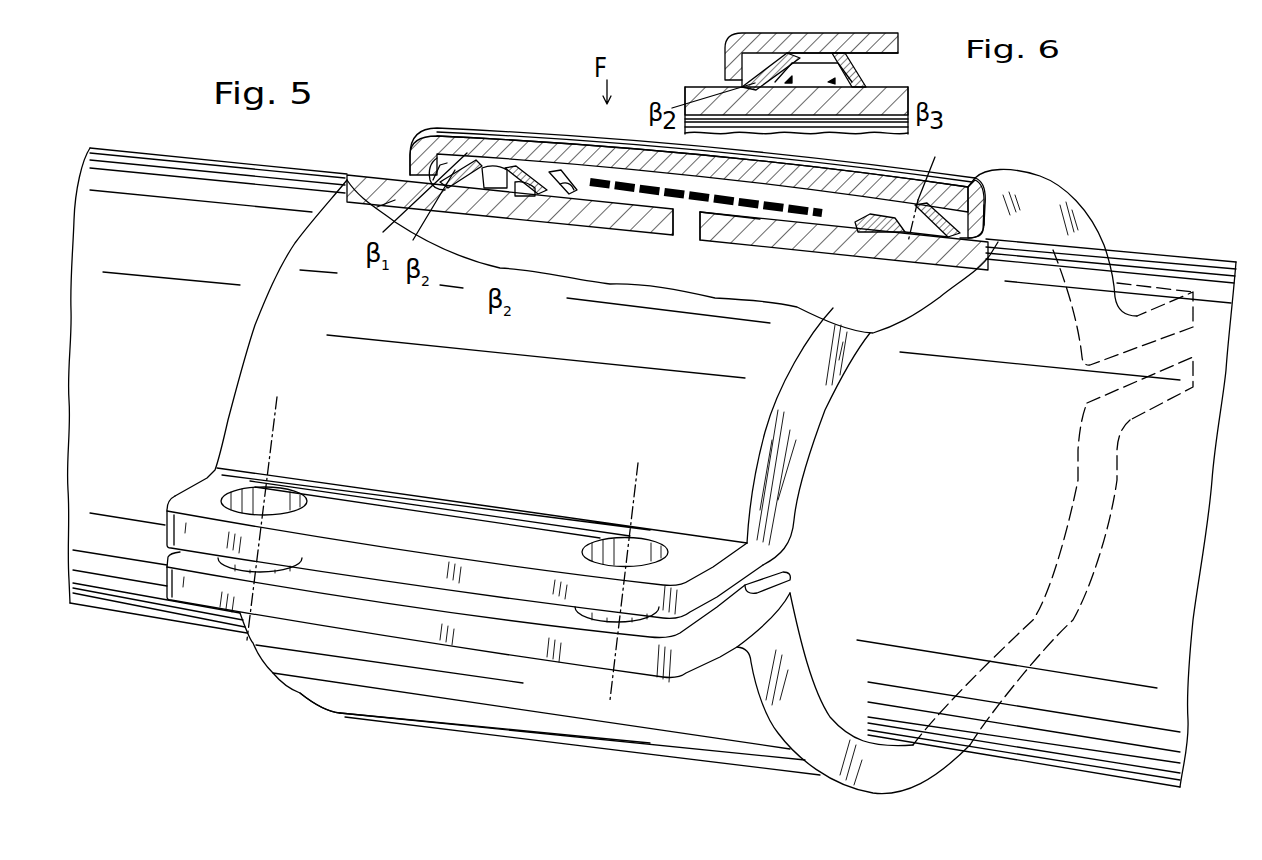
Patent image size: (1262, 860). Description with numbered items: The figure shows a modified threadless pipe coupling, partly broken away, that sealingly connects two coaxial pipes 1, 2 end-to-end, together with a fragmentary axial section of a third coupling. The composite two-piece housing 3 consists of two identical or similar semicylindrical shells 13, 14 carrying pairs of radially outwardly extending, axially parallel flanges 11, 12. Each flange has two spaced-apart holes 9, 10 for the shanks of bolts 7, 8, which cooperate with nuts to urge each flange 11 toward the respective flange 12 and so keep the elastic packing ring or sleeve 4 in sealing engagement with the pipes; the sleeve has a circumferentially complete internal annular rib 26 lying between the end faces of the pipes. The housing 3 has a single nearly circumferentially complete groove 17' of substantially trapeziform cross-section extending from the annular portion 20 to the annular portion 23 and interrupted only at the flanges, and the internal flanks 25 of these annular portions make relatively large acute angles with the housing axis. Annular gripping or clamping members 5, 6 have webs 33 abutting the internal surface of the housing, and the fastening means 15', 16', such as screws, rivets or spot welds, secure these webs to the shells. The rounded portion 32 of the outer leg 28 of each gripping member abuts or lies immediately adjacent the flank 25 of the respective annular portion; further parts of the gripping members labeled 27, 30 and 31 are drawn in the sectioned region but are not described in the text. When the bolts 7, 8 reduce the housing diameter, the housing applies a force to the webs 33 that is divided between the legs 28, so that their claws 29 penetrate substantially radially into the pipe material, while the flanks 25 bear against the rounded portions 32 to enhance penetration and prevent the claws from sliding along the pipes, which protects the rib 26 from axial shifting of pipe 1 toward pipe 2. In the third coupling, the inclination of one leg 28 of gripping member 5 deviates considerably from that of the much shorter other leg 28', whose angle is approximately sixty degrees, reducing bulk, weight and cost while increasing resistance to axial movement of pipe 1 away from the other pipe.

In FIG. 5, the pipe 1 is at (210, 157).
In FIG. 6, the pipe 1 is at (688, 96).
In FIG. 5, the pipe 2 is at (1173, 260).
In FIG. 5, the housing 3 is at (234, 261).
In FIG. 5, the packing ring 4 is at (707, 203).
In FIG. 5, the gripping member 5 is at (457, 157).
In FIG. 6, the gripping member 5 is at (752, 75).
In FIG. 5, the gripping member 6 is at (985, 223).
In FIG. 5, the bolt 7 is at (277, 422).
In FIG. 5, the bolt 8 is at (637, 483).
In FIG. 5, the hole 9 is at (227, 493).
In FIG. 5, the hole 10 is at (603, 537).
In FIG. 5, the flange 11 is at (183, 487).
In FIG. 5, the flange 12 is at (163, 577).
In FIG. 5, the semicylindrical shell 13 is at (247, 323).
In FIG. 5, the semicylindrical shell 14 is at (280, 680).
In FIG. 5, the fastening means 15' is at (483, 76).
In FIG. 5, the fastening means 16' is at (940, 187).
In FIG. 5, the groove 17' is at (706, 227).
In FIG. 6, the groove 17' is at (900, 43).
In FIG. 5, the annular portion 20 is at (408, 160).
In FIG. 6, the annular portion 20 is at (735, 68).
In FIG. 5, the annular portion 23 is at (975, 220).
In FIG. 5, the flank 25 is at (377, 207).
In FIG. 5, the internal annular rib 26 is at (686, 232).
In FIG. 5, the sealing lip 27 is at (537, 163).
In FIG. 5, the leg 28 is at (642, 160).
In FIG. 6, the leg 28 is at (738, 58).
In FIG. 6, the leg 28' is at (881, 69).
In FIG. 5, the claw 29 is at (547, 230).
In FIG. 5, the sealing element 30 is at (553, 197).
In FIG. 5, the sealing lip 31 is at (857, 227).
In FIG. 5, the rounded portion 32 is at (837, 233).
In FIG. 6, the rounded portion 32 is at (735, 80).
In FIG. 5, the web 33 is at (490, 150).
In FIG. 6, the web 33 is at (825, 52).